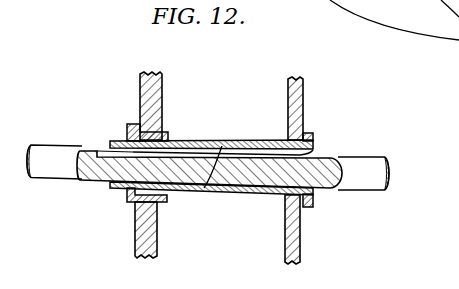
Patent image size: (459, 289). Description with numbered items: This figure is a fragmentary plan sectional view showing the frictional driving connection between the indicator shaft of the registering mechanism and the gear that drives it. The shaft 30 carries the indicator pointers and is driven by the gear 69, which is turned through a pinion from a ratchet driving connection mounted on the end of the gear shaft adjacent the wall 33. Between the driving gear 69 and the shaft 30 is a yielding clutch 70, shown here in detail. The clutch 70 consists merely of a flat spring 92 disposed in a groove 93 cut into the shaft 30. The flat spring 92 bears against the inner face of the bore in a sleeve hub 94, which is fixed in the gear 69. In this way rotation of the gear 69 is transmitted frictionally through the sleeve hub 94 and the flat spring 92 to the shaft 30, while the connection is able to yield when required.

The shaft 30 is at (363, 179).
The wall 33 is at (162, 110).
The gear 69 is at (305, 124).
The yielding clutch 70 is at (116, 128).
The flat spring 92 is at (204, 188).
The groove 93 is at (97, 150).
The sleeve hub 94 is at (222, 146).